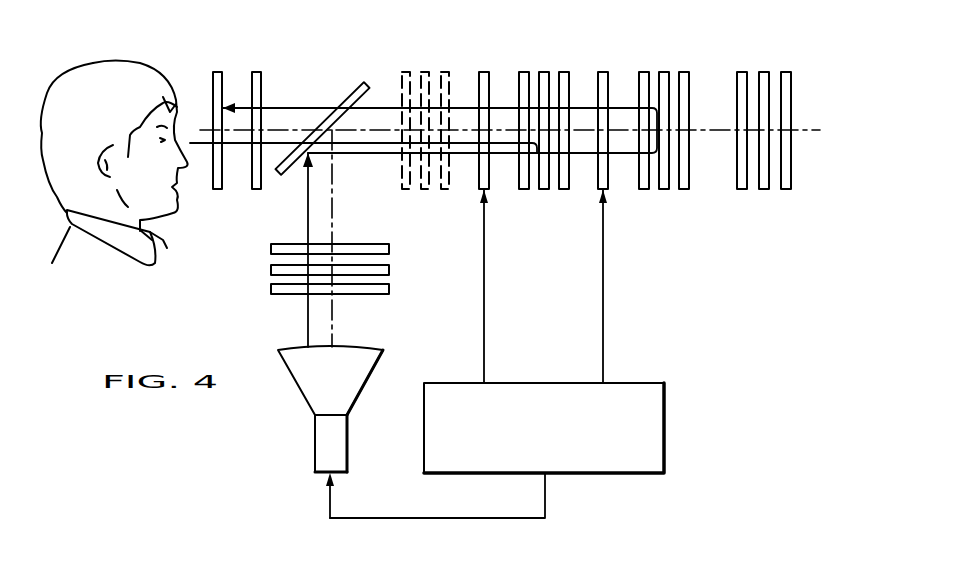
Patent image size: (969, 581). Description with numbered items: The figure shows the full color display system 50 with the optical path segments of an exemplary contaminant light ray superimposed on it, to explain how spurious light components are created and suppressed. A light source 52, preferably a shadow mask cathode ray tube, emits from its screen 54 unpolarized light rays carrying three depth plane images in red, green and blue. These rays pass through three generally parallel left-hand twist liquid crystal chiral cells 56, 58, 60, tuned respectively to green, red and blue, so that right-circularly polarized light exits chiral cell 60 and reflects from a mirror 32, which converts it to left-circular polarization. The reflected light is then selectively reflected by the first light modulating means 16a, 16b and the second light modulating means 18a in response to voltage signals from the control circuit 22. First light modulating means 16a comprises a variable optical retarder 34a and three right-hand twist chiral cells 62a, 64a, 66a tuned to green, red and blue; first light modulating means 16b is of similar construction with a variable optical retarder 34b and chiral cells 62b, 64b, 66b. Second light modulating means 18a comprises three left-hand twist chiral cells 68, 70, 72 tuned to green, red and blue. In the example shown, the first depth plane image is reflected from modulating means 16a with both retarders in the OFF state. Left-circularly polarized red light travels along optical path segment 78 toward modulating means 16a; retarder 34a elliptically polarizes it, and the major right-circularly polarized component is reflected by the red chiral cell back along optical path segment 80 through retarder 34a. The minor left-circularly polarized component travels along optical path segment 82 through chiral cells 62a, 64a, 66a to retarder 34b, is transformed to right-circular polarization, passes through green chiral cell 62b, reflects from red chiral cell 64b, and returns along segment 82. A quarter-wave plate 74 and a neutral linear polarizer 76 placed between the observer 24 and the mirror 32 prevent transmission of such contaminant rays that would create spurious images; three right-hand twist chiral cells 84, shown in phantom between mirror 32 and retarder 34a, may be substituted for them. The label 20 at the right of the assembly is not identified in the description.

The observer 24 is at (93, 63).
The neutral linear polarizer 76 is at (222, 80).
The quarter-wave plate 74 is at (262, 82).
The optical path segment 82 is at (312, 108).
The mirror 32 is at (352, 95).
The variable optical retarder 34a is at (478, 76).
The variable optical retarder 34b is at (597, 78).
The first light modulating means 16a is at (502, 72).
The first light modulating means 16b is at (618, 70).
The second light modulating means 18a is at (760, 70).
The optical axis / light source 20 is at (800, 130).
The optical path segment 80 is at (190, 145).
The optical path segment 78 is at (310, 218).
The right-hand twist liquid crystal chiral cells 84 is at (413, 196).
The left-hand twist liquid crystal chiral cell 60 is at (271, 247).
The left-hand twist liquid crystal chiral cell 58 is at (389, 268).
The left-hand twist liquid crystal chiral cell 56 is at (271, 290).
The screen 54 is at (336, 345).
The light source 52 is at (325, 427).
The full color display system 50 is at (269, 469).
The control circuit 22 is at (665, 410).
The green chiral cell 62a is at (524, 190).
The red chiral cell 64a is at (544, 190).
The blue chiral cell 66a is at (564, 190).
The green chiral cell 62b is at (644, 190).
The red chiral cell 64b is at (664, 190).
The blue chiral cell 66b is at (684, 190).
The left-hand twist liquid crystal chiral cell 68 is at (742, 190).
The left-hand twist liquid crystal chiral cell 70 is at (764, 190).
The left-hand twist liquid crystal chiral cell 72 is at (786, 190).